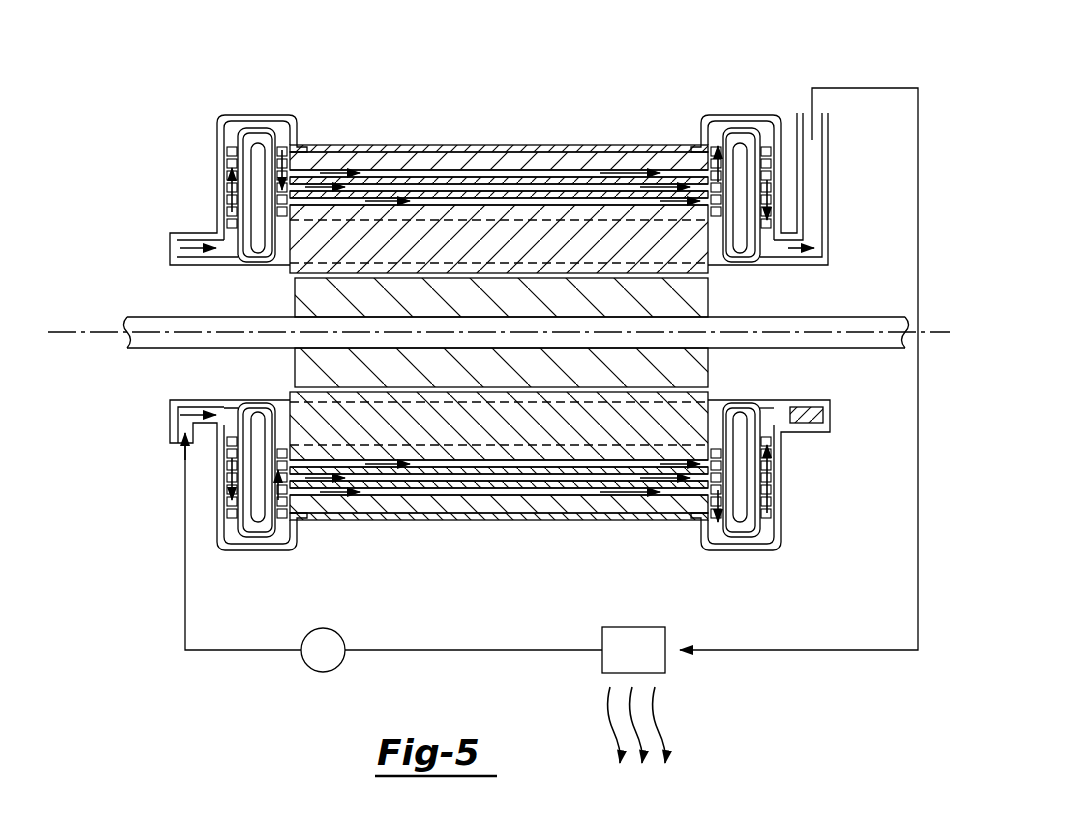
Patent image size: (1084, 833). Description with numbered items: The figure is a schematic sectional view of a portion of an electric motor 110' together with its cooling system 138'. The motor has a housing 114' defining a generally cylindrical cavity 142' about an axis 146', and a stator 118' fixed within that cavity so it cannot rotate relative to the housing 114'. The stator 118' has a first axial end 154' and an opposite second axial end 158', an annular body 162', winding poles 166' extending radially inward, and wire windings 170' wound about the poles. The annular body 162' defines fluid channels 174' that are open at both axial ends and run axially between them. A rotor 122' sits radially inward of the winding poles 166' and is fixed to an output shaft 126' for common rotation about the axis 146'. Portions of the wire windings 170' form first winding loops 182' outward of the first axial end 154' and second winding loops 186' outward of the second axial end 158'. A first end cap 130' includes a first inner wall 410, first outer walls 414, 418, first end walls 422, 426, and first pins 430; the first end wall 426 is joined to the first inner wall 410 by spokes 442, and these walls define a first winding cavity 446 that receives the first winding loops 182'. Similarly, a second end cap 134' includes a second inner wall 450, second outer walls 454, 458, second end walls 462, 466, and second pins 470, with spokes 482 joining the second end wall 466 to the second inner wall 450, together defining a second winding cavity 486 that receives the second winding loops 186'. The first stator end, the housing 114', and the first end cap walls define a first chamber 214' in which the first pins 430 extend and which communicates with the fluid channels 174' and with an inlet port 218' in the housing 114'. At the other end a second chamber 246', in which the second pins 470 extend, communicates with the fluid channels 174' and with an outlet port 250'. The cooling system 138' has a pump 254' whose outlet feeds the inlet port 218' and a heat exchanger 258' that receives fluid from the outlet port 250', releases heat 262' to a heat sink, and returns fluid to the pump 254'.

The electric motor 110' is at (211, 27).
The housing 114' is at (499, 181).
The stator 118' is at (576, 120).
The rotor 122' is at (501, 435).
The output shaft 126' is at (477, 353).
The first end cap 130' is at (163, 274).
The second end cap 134' is at (827, 386).
The cooling system 138' is at (115, 638).
The cylindrical cavity 142' is at (626, 112).
The axis 146' is at (499, 287).
The first axial end 154' is at (500, 314).
The second axial end 158' is at (696, 114).
The annular body 162' is at (499, 502).
The winding poles 166' is at (443, 381).
The wire windings 170' is at (401, 530).
The fluid channels 174' is at (403, 125).
The first winding loops 182' is at (197, 193).
The second winding loops 186' is at (824, 186).
The first chamber 214' is at (213, 104).
The inlet port 218' is at (128, 440).
The second chamber 246' is at (748, 87).
The outlet port 250' is at (799, 345).
The pump 254' is at (265, 575).
The heat exchanger 258' is at (571, 663).
The heat 262' is at (595, 725).
The first inner wall 410 is at (262, 262).
The first outer wall 414 is at (290, 215).
The first outer wall 418 is at (262, 540).
The first end wall 422 is at (290, 470).
The first end wall 426 is at (235, 505).
The first pins 430 is at (228, 150).
The spokes 442 is at (235, 400).
The first winding cavity 446 is at (228, 540).
The second inner wall 450 is at (730, 270).
The second outer wall 454 is at (722, 215).
The second outer wall 458 is at (740, 548).
The second end wall 462 is at (720, 465).
The second end wall 466 is at (760, 515).
The second pins 470 is at (772, 548).
The spokes 482 is at (760, 262).
The second winding cavity 486 is at (732, 398).